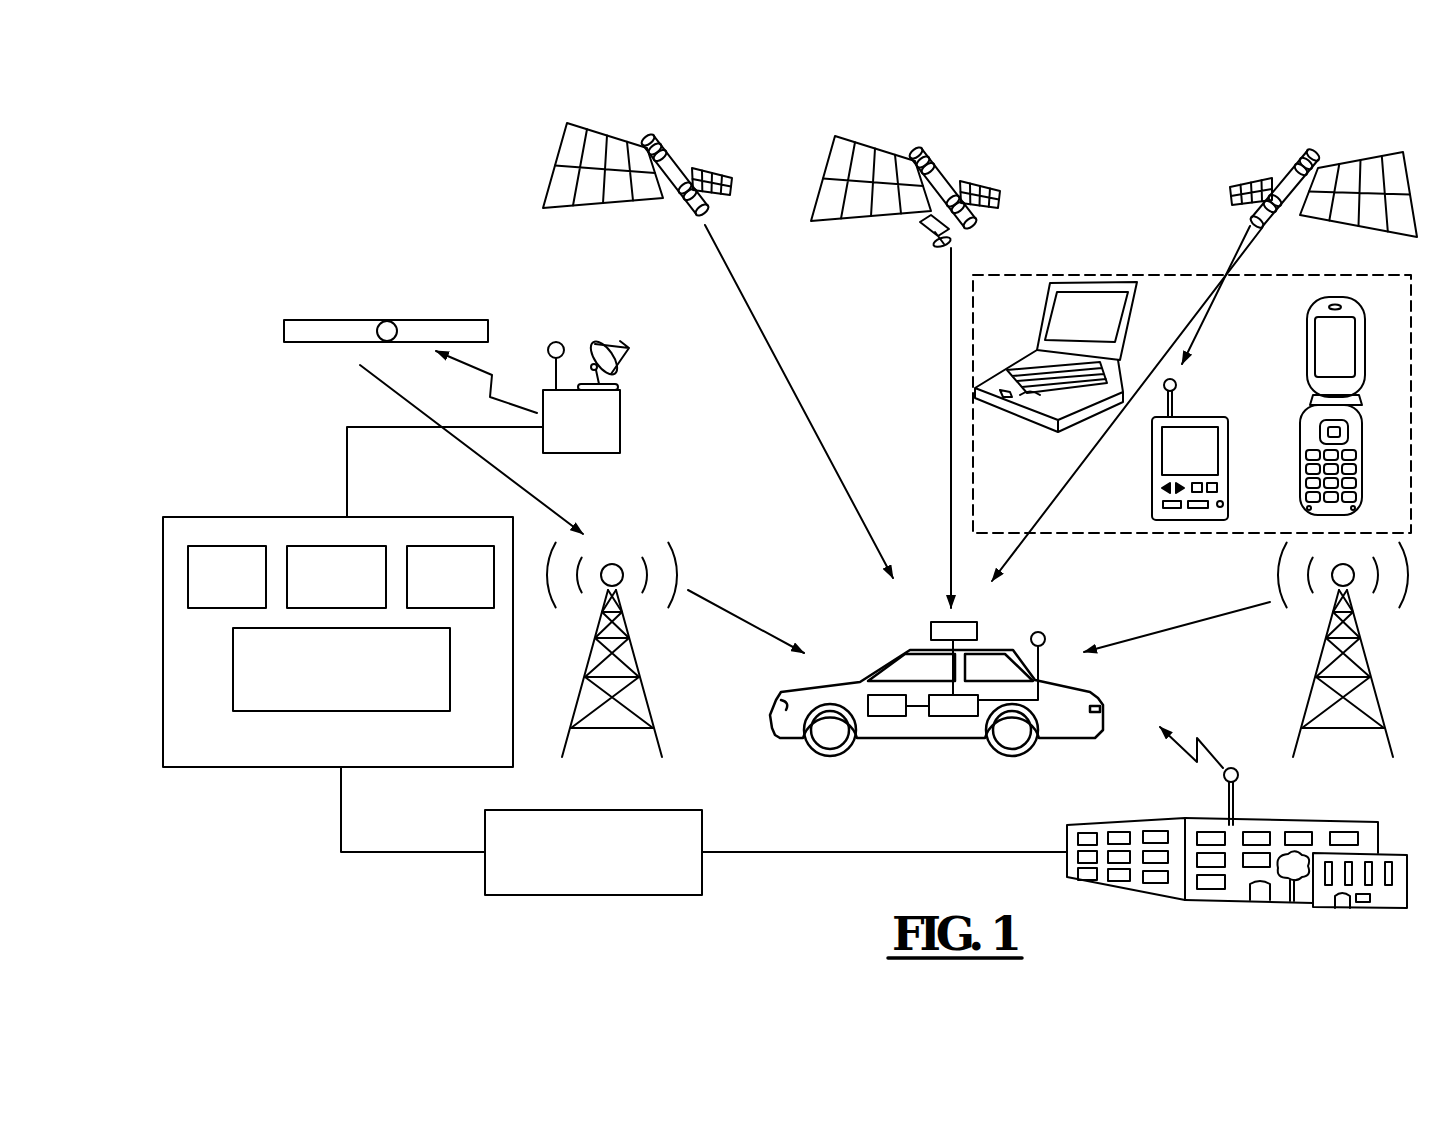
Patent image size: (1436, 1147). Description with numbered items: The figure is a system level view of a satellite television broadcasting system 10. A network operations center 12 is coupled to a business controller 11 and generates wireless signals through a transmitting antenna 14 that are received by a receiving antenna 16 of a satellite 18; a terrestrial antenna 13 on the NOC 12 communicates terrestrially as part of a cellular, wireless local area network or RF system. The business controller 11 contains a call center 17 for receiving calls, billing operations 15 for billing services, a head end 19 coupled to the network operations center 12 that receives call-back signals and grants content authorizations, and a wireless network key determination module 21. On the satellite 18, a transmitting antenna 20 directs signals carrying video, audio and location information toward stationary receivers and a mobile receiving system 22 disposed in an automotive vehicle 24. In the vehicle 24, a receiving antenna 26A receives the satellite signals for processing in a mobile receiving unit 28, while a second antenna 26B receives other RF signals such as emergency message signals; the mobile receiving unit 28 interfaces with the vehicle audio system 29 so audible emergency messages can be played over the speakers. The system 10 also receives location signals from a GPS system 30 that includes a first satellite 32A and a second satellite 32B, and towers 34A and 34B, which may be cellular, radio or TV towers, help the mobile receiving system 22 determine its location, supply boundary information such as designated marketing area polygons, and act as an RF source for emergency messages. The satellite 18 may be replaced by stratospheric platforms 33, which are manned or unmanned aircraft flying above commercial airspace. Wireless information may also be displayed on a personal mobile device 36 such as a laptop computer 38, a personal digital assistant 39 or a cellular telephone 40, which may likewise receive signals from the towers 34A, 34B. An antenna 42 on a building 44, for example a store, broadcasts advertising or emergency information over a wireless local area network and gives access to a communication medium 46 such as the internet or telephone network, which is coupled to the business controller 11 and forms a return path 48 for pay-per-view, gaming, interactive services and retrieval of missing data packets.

The satellite television broadcasting system 10 is at (616, 248).
The business controller 11 is at (192, 517).
The network operations center 12 is at (620, 427).
The terrestrial antenna 13 is at (563, 345).
The transmitting antenna 14 is at (632, 371).
The billing operations 15 is at (310, 546).
The receiving antenna 16 is at (930, 240).
The call center 17 is at (236, 546).
The satellite 18 is at (946, 170).
The head end 19 is at (440, 546).
The transmitting antenna 20 is at (974, 243).
The wireless network key determination module 21 is at (402, 714).
The mobile receiving system 22 is at (962, 664).
The automotive vehicle 24 is at (1103, 700).
The receiving antenna 26A is at (931, 634).
The second antenna 26B is at (1050, 655).
The mobile receiving unit 28 is at (958, 718).
The vehicle audio system 29 is at (884, 718).
The GPS system 30 is at (517, 153).
The first satellite 32A is at (680, 158).
The second satellite 32B is at (1290, 165).
The stratospheric platform 33 is at (430, 320).
The tower 34A is at (638, 659).
The tower 34B is at (1317, 665).
The personal mobile device 36 is at (1350, 272).
The laptop computer 38 is at (1020, 410).
The personal digital assistant 39 is at (1212, 417).
The cellular telephone 40 is at (1305, 378).
The antenna 42 is at (1240, 776).
The building 44 is at (1325, 820).
The communication medium 46 is at (640, 895).
The return path 48 is at (745, 850).